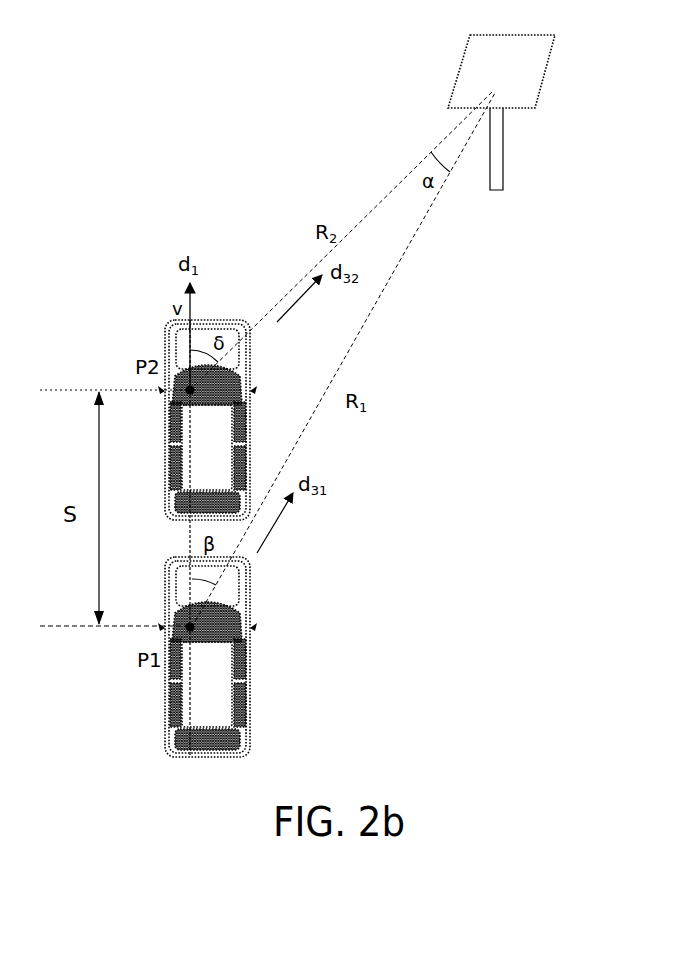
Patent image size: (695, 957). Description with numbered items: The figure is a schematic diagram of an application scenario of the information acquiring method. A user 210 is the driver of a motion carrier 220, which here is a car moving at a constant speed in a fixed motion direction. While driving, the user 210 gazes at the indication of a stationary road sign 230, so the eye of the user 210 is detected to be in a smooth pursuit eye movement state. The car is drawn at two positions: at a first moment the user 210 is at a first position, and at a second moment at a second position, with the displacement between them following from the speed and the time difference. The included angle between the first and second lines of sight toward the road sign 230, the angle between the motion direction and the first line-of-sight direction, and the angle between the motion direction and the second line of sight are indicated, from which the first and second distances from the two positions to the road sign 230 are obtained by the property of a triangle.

The user 210 is at (165, 383).
The motion carrier 220 is at (250, 351).
The road sign 230 is at (555, 45).